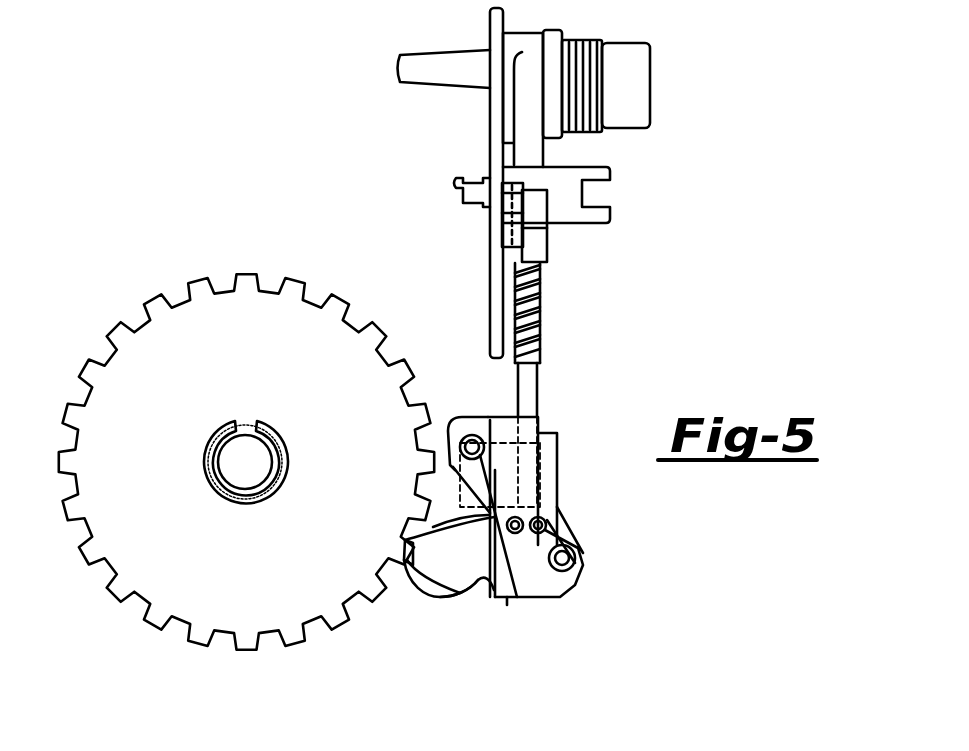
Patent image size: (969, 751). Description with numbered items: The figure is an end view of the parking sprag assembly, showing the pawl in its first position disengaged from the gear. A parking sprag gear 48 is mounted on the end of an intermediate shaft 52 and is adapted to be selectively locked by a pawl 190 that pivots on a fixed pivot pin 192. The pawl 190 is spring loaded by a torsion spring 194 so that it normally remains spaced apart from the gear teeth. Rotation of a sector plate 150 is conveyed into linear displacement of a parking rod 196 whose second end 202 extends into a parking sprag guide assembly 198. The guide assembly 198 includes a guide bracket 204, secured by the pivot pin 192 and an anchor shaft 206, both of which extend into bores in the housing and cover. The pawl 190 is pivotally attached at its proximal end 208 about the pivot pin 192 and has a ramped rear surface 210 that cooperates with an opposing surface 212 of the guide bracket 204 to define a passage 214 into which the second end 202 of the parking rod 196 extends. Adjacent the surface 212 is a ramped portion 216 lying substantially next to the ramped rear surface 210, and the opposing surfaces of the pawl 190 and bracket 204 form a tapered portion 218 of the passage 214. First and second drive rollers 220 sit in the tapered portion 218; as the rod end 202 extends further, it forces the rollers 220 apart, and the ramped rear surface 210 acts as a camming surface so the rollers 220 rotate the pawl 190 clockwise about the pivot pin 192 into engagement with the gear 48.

The parking sprag gear 48 is at (122, 326).
The intermediate shaft 52 is at (257, 460).
The sector plate 150 is at (490, 338).
The pawl 190 is at (472, 597).
The fixed pivot pin 192 is at (523, 402).
The torsion spring 194 is at (565, 514).
The parking rod 196 is at (527, 380).
The parking sprag guide assembly 198 is at (587, 580).
The second end of parking rod 202 is at (527, 480).
The guide bracket 204 is at (587, 563).
The anchor shaft 206 is at (580, 582).
The proximal end of pawl 208 is at (452, 420).
The ramped rear surface 210 is at (560, 516).
The opposing surface of guide bracket 212 is at (533, 600).
The passage 214 is at (513, 603).
The ramped portion 216 is at (575, 546).
The tapered portion of passage 218 is at (407, 545).
The drive rollers 220 is at (413, 543).